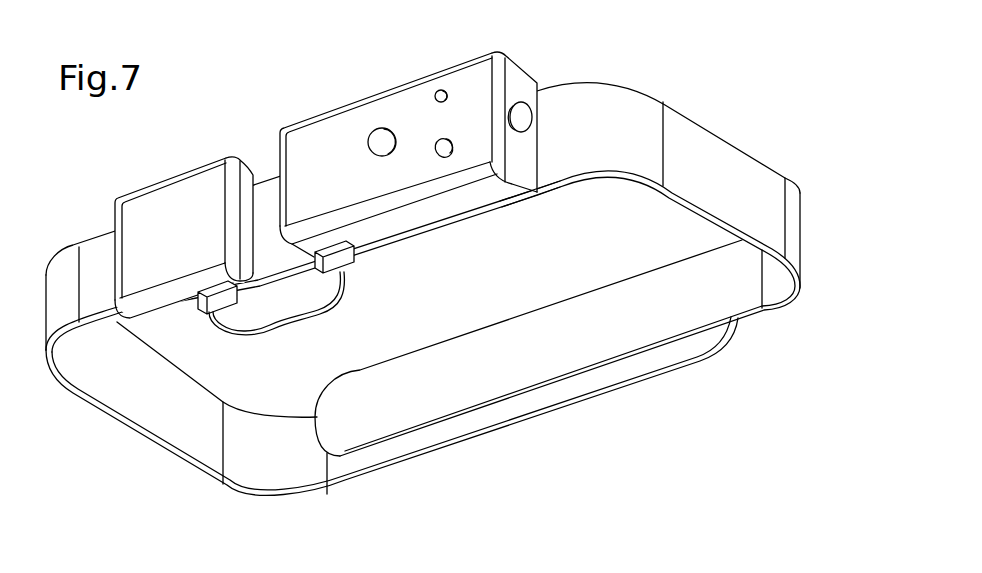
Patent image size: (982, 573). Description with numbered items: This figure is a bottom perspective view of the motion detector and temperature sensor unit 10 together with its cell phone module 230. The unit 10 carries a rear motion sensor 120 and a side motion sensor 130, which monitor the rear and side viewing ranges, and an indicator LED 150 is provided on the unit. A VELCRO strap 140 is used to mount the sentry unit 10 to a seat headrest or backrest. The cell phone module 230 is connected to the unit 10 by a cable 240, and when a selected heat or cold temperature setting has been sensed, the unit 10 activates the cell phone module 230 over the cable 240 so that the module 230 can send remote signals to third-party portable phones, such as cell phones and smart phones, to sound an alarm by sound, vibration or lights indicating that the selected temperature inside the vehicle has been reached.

The motion detector and temperature sensor unit 10 is at (549, 44).
The rear motion sensor 120 is at (381, 140).
The side motion sensor 130 is at (525, 130).
The VELCRO strap 140 is at (710, 140).
The indicator LED 150 is at (437, 91).
The cell phone module 230 is at (160, 202).
The cable 240 is at (300, 306).